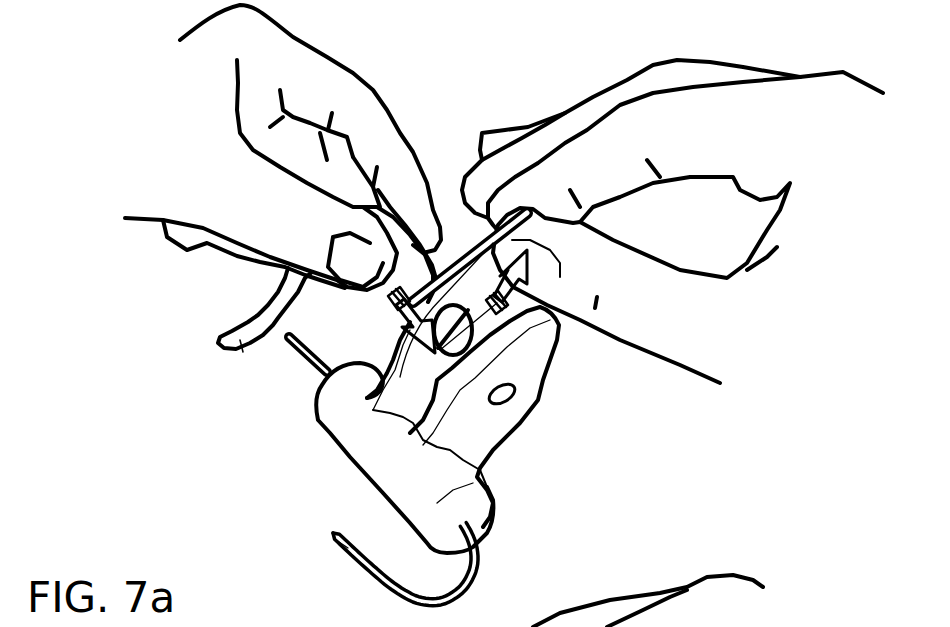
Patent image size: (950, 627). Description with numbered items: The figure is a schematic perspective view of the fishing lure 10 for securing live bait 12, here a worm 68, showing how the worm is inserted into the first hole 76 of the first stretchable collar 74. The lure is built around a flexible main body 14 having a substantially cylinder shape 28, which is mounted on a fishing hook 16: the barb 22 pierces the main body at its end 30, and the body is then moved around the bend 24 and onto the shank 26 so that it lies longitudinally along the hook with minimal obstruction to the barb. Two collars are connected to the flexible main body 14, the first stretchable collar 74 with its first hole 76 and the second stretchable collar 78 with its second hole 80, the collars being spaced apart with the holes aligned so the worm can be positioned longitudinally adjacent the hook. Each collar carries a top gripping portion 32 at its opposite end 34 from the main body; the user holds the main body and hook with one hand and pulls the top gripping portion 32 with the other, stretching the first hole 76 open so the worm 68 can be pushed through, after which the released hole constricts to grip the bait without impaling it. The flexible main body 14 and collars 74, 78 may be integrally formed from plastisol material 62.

The fishing lure 10 is at (473, 238).
The live bait 12 is at (236, 325).
The worm 68 is at (243, 350).
The flexible main body 14 is at (333, 408).
The fishing hook 16 is at (397, 541).
The barb 22 is at (370, 539).
The bend 24 is at (448, 576).
The shank 26 is at (326, 483).
The substantially cylinder shape 28 is at (427, 532).
The end 30 is at (424, 541).
The top gripping portion 32 is at (455, 220).
The opposite end 34 is at (376, 350).
The plastisol material 62 is at (504, 417).
The first stretchable collar 74 is at (583, 347).
The first hole 76 is at (507, 387).
The second stretchable collar 78 is at (432, 232).
The second hole 80 is at (462, 311).